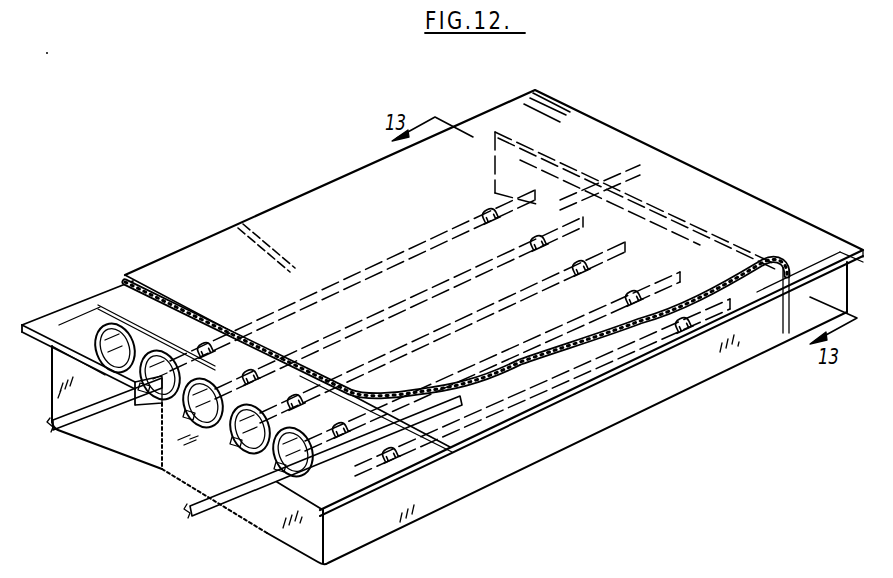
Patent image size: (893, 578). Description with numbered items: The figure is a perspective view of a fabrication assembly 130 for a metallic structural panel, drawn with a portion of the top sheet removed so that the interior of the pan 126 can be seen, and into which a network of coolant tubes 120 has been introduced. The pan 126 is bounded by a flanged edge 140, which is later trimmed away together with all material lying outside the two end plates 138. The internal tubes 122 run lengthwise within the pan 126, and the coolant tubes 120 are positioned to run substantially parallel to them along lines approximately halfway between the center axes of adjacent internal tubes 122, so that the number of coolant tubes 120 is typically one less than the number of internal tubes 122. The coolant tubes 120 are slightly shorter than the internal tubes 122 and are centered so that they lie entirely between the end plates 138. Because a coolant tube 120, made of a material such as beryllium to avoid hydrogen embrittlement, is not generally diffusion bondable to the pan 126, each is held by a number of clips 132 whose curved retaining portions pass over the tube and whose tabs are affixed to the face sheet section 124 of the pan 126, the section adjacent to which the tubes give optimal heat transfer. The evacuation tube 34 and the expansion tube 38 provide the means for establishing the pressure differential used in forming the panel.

The fabrication assembly 130 is at (371, 137).
The pan 126 is at (294, 214).
The flanged edge 140 is at (80, 322).
The end plate 138 is at (84, 318).
The internal tube 122 is at (187, 343).
The clip 132 is at (258, 372).
The coolant tube 120 is at (437, 323).
The expansion tube 38 is at (56, 431).
The evacuation tube 34 is at (194, 514).
The face sheet section 124 is at (186, 470).